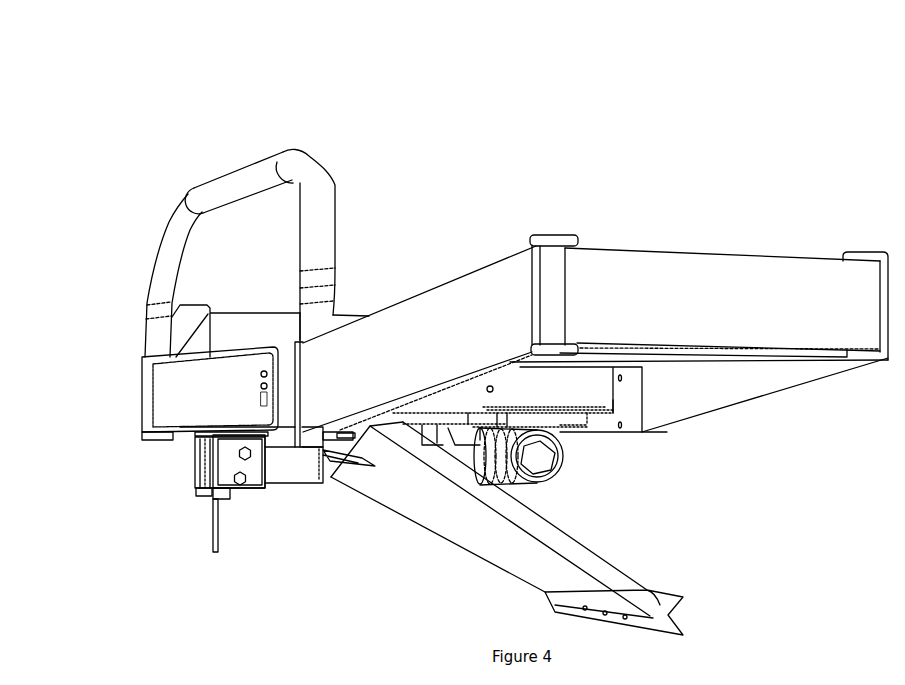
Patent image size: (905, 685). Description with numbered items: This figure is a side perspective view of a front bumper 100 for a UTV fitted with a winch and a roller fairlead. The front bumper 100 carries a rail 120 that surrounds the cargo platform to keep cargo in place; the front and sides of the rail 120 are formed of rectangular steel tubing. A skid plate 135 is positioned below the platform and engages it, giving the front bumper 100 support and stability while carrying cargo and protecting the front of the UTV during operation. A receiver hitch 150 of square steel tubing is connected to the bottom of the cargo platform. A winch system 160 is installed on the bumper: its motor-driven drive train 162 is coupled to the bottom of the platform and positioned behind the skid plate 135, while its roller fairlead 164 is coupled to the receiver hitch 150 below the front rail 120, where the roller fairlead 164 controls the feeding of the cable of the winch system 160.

The front bumper 100 is at (703, 180).
The rail 120 is at (147, 390).
The skid plate 135 is at (482, 557).
The receiver hitch 150 is at (285, 477).
The winch system 160 is at (148, 500).
The motor-driven drive train 162 is at (547, 458).
The roller fairlead 164 is at (235, 500).